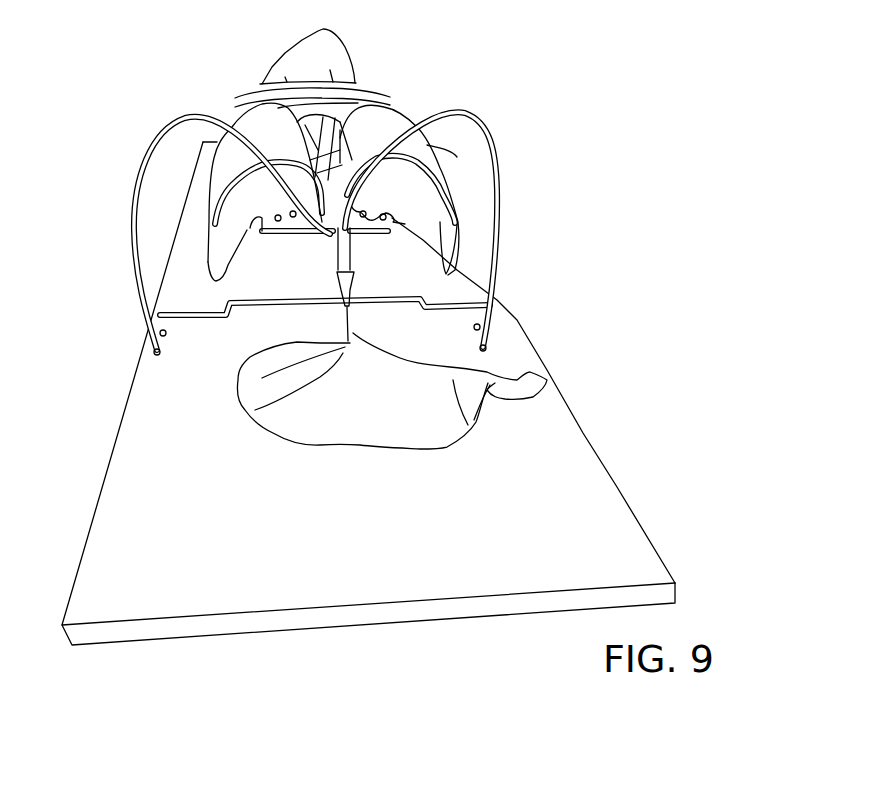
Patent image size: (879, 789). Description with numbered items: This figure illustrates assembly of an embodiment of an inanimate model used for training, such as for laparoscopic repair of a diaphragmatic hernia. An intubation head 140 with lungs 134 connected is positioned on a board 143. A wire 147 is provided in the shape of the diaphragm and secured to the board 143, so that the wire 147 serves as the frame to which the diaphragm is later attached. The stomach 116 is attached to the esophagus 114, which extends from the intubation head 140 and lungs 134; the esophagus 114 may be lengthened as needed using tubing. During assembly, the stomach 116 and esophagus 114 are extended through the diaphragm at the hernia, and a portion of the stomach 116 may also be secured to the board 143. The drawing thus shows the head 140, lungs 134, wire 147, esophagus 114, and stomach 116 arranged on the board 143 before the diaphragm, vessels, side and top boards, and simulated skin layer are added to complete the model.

The intubation head 140 is at (335, 54).
The lungs 134 is at (383, 122).
The wire 147 is at (507, 218).
The esophagus 114 is at (340, 253).
The stomach 116 is at (440, 417).
The board 143 is at (563, 527).